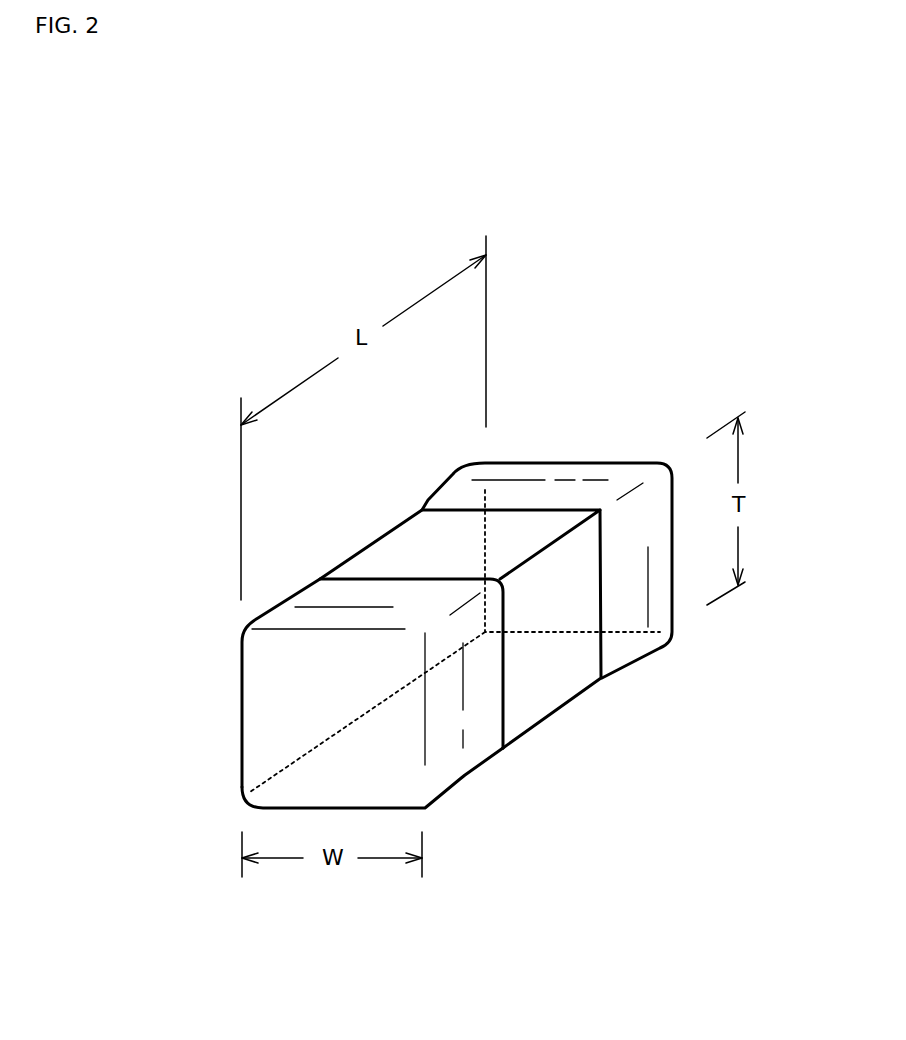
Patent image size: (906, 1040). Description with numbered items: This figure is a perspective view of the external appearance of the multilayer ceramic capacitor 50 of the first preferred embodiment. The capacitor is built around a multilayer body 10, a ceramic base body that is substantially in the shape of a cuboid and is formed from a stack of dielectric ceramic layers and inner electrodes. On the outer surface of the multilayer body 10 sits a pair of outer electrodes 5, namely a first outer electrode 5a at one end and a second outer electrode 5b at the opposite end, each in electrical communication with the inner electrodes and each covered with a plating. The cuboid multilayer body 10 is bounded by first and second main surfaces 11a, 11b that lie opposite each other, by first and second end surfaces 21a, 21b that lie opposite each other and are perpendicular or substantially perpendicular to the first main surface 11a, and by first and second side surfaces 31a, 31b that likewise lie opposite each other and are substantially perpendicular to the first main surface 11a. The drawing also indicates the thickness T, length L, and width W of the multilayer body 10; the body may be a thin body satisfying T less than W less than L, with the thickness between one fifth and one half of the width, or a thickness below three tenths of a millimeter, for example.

The multilayer ceramic capacitor 50 is at (533, 432).
The multilayer body 10 is at (532, 727).
The outer electrodes 5 is at (495, 650).
The first outer electrode 5a is at (478, 733).
The second outer electrode 5b is at (628, 648).
The first main surface 11a is at (378, 563).
The second main surface 11b is at (577, 668).
The first end surface 21a is at (313, 699).
The second end surface 21b is at (583, 498).
The first side surface 31a is at (417, 548).
The second side surface 31b is at (537, 650).